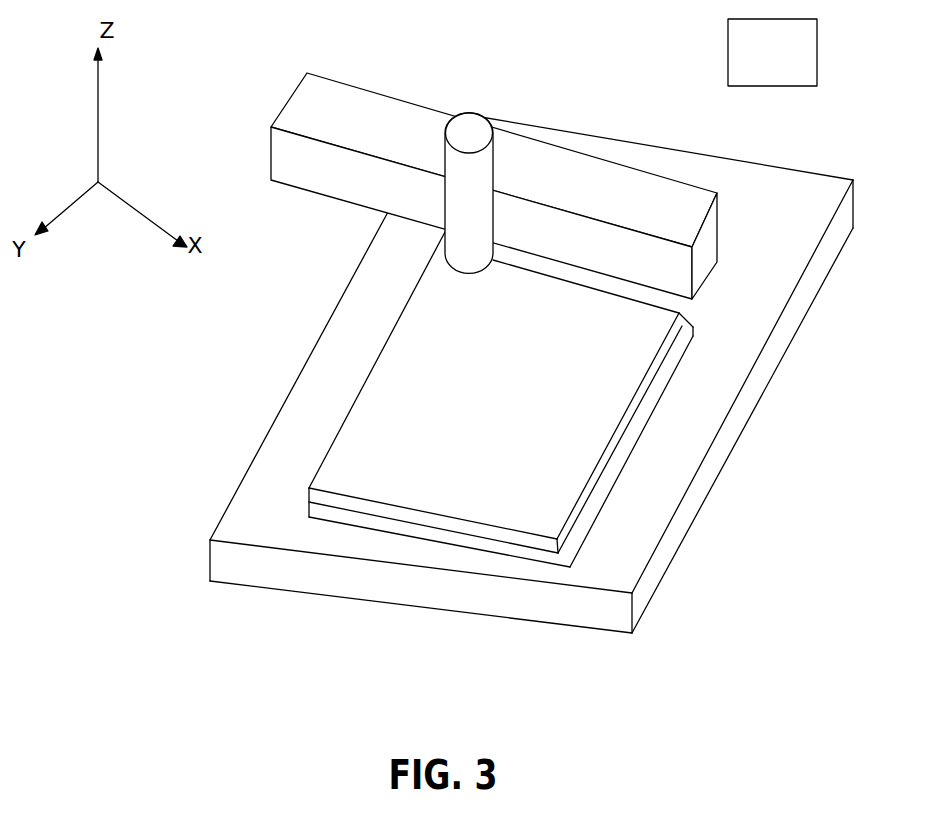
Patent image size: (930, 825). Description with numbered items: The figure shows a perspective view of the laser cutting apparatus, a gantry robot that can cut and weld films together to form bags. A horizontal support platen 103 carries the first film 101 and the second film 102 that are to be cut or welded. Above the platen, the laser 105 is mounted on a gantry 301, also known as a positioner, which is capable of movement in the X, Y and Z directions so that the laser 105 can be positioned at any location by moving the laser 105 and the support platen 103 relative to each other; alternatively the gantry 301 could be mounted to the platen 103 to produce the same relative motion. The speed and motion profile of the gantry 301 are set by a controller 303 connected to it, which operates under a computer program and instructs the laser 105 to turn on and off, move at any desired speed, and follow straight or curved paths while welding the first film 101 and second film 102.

The first film 101 is at (310, 500).
The second film 102 is at (494, 392).
The support platen 103 is at (298, 567).
The laser 105 is at (457, 220).
The gantry 301 is at (548, 180).
The controller 303 is at (618, 167).